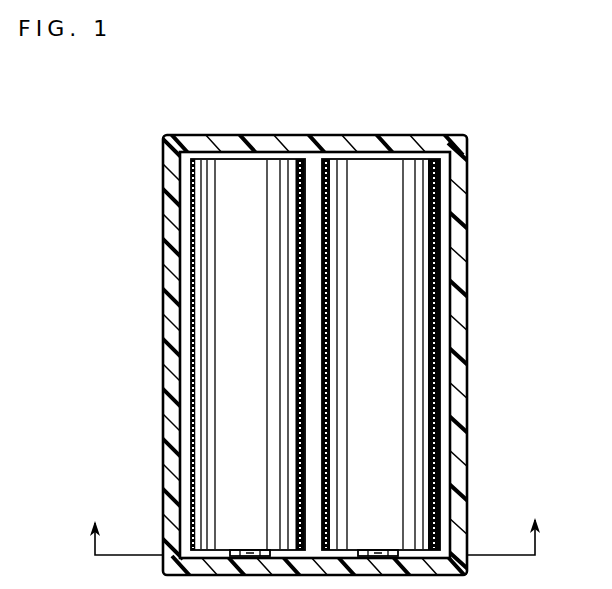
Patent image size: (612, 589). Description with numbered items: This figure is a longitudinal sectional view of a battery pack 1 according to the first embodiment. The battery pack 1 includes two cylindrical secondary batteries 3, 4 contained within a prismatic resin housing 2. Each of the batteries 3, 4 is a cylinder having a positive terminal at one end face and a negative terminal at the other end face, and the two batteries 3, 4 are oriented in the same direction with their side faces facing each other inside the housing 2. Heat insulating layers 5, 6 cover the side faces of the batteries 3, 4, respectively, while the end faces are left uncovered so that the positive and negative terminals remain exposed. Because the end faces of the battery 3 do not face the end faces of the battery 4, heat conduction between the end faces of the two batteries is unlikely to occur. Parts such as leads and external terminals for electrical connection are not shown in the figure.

The battery pack 1 is at (219, 125).
The prismatic resin housing 2 is at (359, 152).
The battery 3 is at (228, 270).
The battery 4 is at (410, 281).
The heat insulating layer 5 is at (195, 397).
The heat insulating layer 6 is at (440, 421).